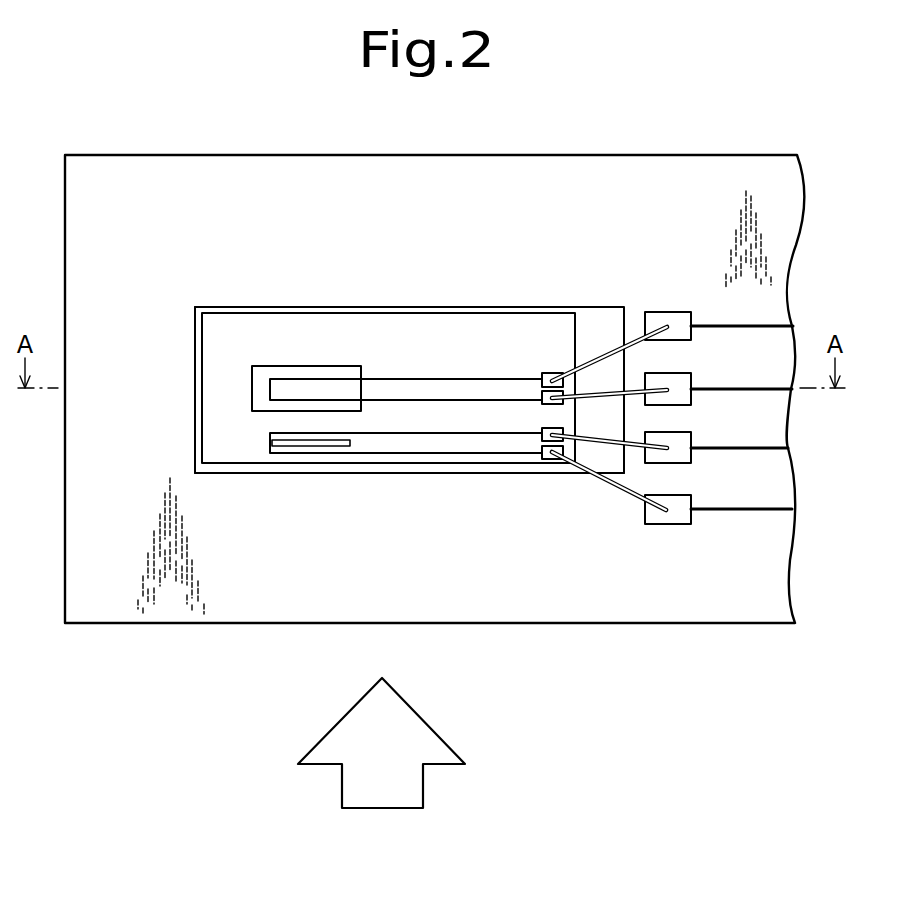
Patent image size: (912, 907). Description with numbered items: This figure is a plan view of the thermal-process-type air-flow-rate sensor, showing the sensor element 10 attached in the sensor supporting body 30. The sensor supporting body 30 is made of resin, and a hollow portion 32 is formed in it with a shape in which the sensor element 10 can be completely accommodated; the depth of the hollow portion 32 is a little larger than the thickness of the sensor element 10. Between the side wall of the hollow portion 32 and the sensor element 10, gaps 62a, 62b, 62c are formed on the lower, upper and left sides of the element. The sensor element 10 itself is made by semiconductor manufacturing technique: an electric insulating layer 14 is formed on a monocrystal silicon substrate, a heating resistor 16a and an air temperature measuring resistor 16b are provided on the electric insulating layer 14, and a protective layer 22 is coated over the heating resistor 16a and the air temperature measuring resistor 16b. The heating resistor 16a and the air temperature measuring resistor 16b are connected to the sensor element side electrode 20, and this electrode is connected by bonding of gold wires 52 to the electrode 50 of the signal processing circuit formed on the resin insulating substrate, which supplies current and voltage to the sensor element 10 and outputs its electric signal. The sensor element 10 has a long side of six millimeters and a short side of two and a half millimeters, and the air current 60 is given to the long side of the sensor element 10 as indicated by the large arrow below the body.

The sensor element 10 is at (213, 343).
The electric insulating layer 14 is at (315, 255).
The protective layer 22 is at (306, 378).
The heating resistor 16a is at (288, 379).
The air temperature measuring resistor 16b is at (302, 453).
The sensor element side electrode 20 is at (551, 373).
The sensor supporting body 30 is at (95, 595).
The hollow portion 32 is at (613, 460).
The electrode 50 is at (665, 312).
The gold wires 52 is at (619, 484).
The air current 60 is at (364, 765).
The gap 62a is at (457, 473).
The gap 62b is at (437, 308).
The gap 62c is at (195, 438).